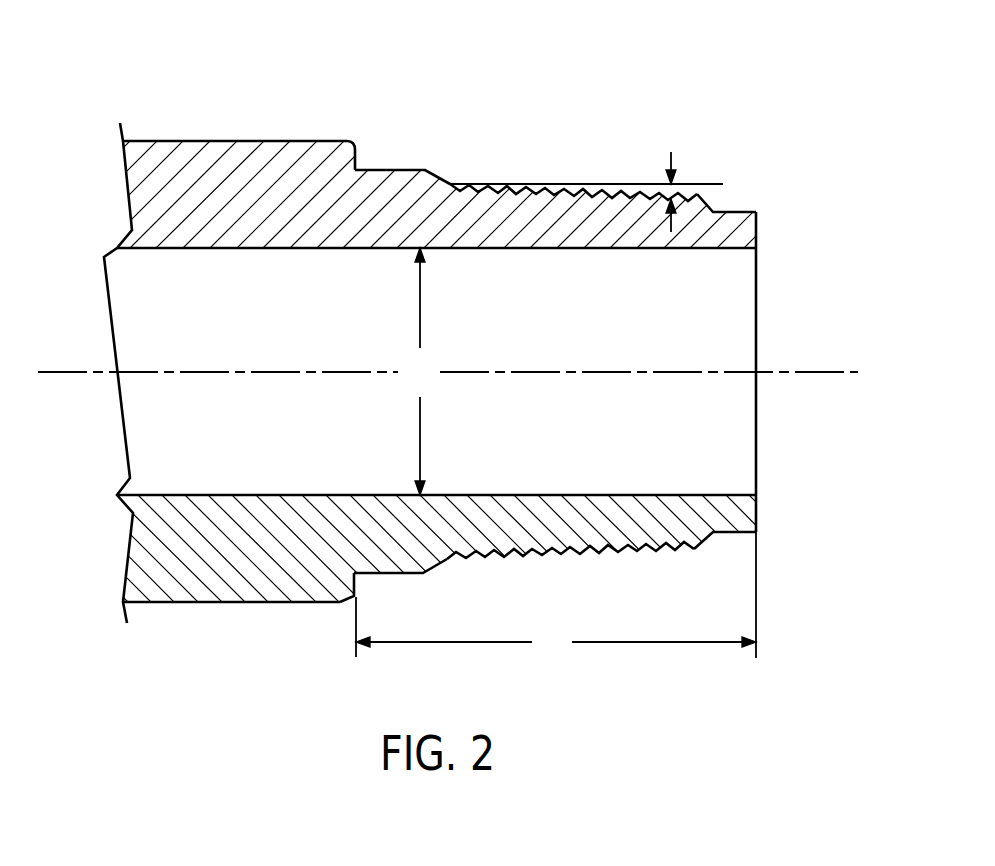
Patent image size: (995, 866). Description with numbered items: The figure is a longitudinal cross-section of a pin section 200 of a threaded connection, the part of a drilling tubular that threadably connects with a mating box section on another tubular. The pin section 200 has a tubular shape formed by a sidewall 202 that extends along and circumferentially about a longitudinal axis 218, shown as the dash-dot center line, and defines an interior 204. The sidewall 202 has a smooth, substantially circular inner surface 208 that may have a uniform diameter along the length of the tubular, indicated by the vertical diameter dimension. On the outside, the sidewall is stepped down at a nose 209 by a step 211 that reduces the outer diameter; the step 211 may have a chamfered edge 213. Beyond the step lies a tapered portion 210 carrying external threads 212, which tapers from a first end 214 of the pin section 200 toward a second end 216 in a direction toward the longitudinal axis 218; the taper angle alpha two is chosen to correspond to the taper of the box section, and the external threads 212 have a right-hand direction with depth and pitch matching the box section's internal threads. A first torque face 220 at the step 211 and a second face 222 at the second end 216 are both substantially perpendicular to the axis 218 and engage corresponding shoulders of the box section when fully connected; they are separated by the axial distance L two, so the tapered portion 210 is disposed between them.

The pin section 200 is at (737, 70).
The sidewall 202 is at (178, 175).
The interior 204 is at (580, 330).
The inner surface 208 is at (235, 495).
The nose 209 is at (603, 160).
The tapered portion 210 is at (521, 184).
The step 211 is at (366, 124).
The external threads 212 is at (502, 556).
The chamfered edge 213 is at (348, 142).
The first end 214 is at (112, 623).
The second end 216 is at (741, 556).
The longitudinal axis 218 is at (770, 372).
The first torque face 220 is at (357, 153).
The second face 222 is at (757, 507).